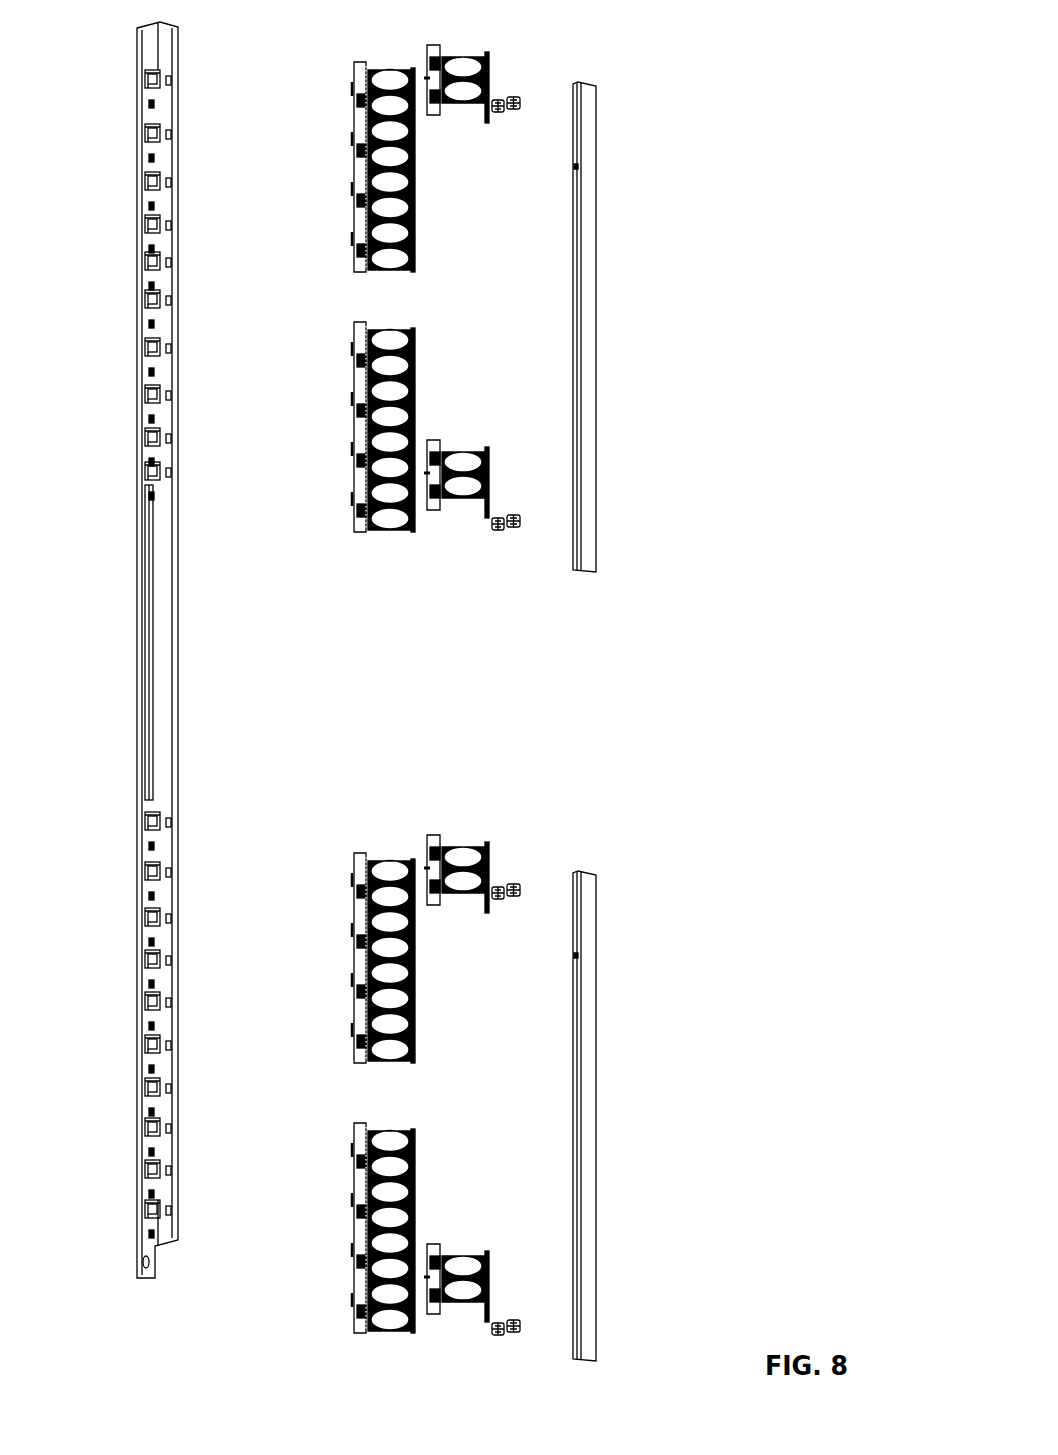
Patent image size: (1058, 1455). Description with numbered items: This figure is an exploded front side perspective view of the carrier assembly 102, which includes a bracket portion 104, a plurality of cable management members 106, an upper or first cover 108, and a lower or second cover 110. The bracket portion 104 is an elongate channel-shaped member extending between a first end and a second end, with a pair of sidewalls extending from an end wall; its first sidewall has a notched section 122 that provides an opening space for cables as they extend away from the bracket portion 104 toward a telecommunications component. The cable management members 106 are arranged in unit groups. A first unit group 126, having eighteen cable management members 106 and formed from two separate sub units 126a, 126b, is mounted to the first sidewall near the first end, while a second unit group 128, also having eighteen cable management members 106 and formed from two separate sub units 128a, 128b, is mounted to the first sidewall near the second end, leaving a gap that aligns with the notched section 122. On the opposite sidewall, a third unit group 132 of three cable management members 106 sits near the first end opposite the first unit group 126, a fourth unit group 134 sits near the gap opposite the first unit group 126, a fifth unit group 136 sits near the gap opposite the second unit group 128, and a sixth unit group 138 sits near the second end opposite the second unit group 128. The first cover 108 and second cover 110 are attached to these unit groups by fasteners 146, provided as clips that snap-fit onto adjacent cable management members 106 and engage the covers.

The carrier assembly 102 is at (728, 50).
The bracket portion 104 is at (115, 650).
The cable management members 106 is at (410, 666).
The first cover 108 is at (592, 332).
The second cover 110 is at (592, 1057).
The notched section 122 is at (160, 608).
The first unit group 126 is at (387, 266).
The sub unit 126a is at (357, 340).
The sub unit 126b is at (357, 160).
The second unit group 128 is at (374, 1050).
The sub unit 128a is at (357, 953).
The sub unit 128b is at (357, 1138).
The third unit group 132 is at (476, 46).
The fourth unit group 134 is at (433, 440).
The fifth unit group 136 is at (433, 835).
The sixth unit group 138 is at (433, 1245).
The fasteners 146 is at (497, 114).